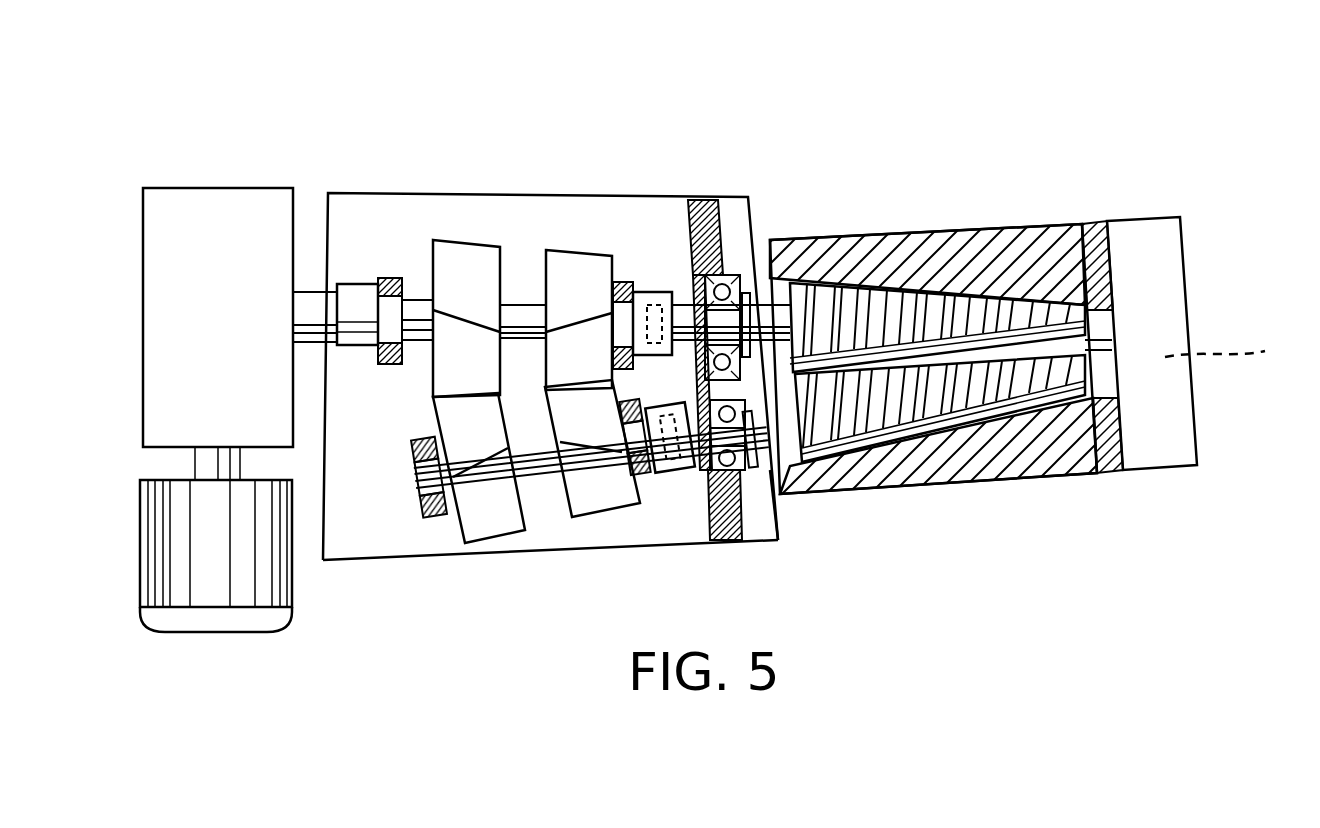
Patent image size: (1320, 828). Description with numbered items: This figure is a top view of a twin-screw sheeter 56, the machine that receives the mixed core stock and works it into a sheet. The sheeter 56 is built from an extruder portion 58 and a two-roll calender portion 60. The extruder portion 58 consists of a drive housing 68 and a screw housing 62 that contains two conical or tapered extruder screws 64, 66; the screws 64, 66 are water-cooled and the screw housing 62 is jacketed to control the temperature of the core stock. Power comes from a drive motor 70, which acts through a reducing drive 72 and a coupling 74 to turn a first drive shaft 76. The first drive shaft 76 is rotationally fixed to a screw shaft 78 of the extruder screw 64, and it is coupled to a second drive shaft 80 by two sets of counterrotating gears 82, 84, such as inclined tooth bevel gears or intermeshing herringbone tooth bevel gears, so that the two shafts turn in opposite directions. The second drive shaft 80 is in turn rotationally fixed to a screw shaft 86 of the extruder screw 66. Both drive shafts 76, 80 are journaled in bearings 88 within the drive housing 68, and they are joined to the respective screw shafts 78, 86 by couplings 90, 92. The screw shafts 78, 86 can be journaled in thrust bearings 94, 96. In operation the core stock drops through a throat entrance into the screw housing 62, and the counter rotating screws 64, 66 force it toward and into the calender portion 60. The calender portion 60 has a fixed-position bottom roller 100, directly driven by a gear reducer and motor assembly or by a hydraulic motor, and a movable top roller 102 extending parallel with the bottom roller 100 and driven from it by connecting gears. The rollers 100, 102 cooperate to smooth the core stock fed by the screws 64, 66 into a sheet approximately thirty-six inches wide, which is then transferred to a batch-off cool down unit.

The sheeter 56 is at (856, 118).
The extruder portion 58 is at (570, 188).
The two-roll calender portion 60 is at (1157, 205).
The screw housing 62 is at (1050, 455).
The extruder screw 64 is at (880, 300).
The extruder screw 66 is at (905, 410).
The drive housing 68 is at (474, 558).
The drive motor 70 is at (230, 628).
The reducing drive 72 is at (213, 215).
The coupling 74 is at (357, 292).
The first drive shaft 76 is at (527, 305).
The screw shaft 78 is at (683, 352).
The second drive shaft 80 is at (537, 462).
The counterrotating gears 82 is at (486, 236).
The counterrotating gears 84 is at (558, 245).
The screw shaft 86 is at (730, 470).
The bearings 88 is at (625, 288).
The coupling 90 is at (655, 355).
The coupling 92 is at (685, 470).
The thrust bearing 94 is at (722, 282).
The thrust bearing 96 is at (772, 488).
The bottom roller 100 is at (1240, 362).
The top roller 102 is at (1153, 268).